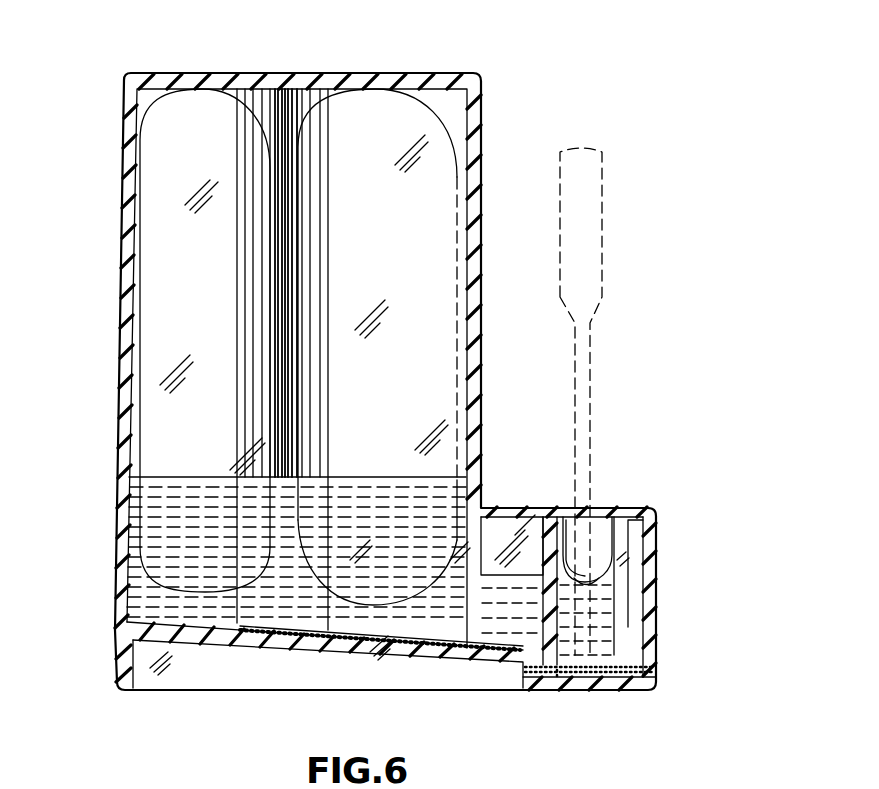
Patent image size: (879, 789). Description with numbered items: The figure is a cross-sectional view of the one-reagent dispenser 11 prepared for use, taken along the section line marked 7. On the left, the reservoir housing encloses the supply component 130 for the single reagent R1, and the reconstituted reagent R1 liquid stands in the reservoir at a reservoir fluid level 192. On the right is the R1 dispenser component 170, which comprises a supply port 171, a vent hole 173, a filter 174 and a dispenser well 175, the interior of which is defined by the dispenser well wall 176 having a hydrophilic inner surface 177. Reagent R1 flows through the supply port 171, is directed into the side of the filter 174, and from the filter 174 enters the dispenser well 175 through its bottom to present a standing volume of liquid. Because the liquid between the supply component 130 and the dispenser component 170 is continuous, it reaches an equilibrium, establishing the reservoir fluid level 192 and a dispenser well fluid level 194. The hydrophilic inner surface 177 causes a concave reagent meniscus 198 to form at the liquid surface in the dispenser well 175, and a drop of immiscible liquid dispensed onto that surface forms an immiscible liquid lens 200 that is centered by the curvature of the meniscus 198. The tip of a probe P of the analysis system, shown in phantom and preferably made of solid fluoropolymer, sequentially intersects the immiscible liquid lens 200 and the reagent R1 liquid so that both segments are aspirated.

The supply component 130 is at (201, 63).
The one-reagent dispenser 11 is at (475, 53).
The section line 7- 7 is at (82, 131).
The reservoir fluid level 192 is at (158, 472).
The reagent R1 is at (138, 575).
The supply port 171 is at (470, 611).
The vent hole 173 is at (497, 514).
The concave reagent meniscus 198 is at (560, 570).
The dispenser component 170 is at (596, 504).
The immiscible liquid lens 200 is at (566, 534).
The hydrophilic inner surface 177 is at (600, 512).
The dispenser well wall 176 is at (626, 509).
The dispenser well 175 is at (636, 519).
The dispenser well fluid level 194 is at (630, 558).
The filter 174 is at (650, 673).
The probe P is at (605, 173).